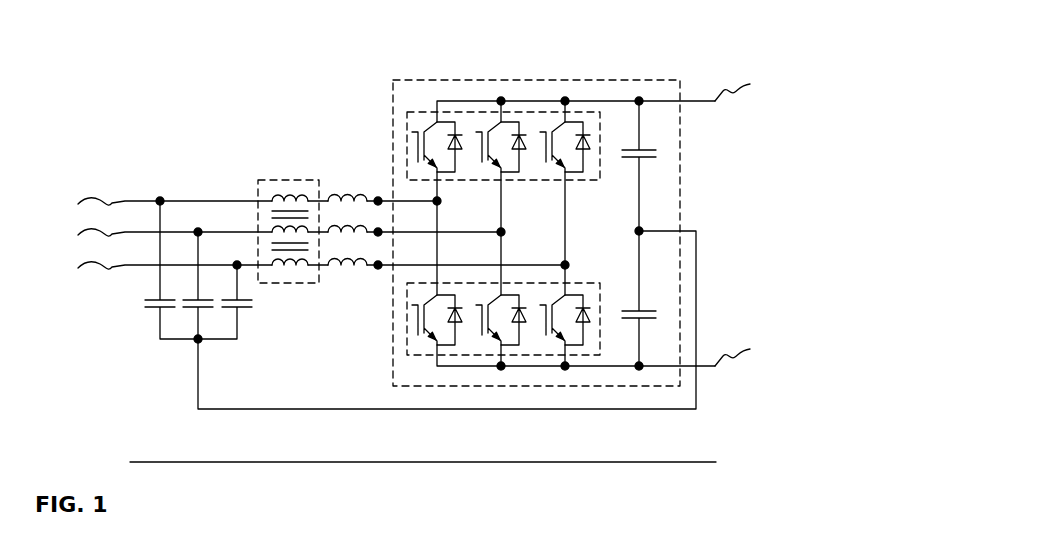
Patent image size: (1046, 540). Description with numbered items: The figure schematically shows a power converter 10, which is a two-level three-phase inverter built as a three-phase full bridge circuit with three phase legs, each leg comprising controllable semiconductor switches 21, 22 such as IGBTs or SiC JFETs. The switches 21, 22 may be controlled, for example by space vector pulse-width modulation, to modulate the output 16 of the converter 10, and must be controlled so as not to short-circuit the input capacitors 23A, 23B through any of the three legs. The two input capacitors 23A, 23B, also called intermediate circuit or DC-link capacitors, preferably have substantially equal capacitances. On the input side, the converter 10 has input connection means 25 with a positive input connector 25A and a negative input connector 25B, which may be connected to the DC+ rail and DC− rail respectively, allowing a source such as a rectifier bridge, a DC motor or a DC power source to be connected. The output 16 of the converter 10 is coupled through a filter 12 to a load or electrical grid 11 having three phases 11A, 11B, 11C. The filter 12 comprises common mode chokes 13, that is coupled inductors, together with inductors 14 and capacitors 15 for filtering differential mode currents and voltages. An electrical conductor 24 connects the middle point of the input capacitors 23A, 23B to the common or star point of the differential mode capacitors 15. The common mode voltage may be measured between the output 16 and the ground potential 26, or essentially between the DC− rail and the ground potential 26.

The power converter 10 is at (478, 222).
The electrical grid 11 is at (131, 196).
The first phase 11A is at (92, 201).
The second phase 11B is at (111, 233).
The third phase 11C is at (131, 266).
The filter 12 is at (321, 230).
The common mode chokes 13 is at (290, 180).
The inductors 14 is at (347, 277).
The capacitors 15 is at (127, 312).
The output 16 is at (379, 196).
The controllable switches 21 is at (527, 112).
The controllable switches 22 is at (407, 333).
The input capacitor 23A is at (668, 152).
The input capacitor 23B is at (668, 316).
The electrical conductor 24 is at (697, 237).
The input connection means 25 is at (753, 190).
The positive input connector 25A is at (753, 87).
The negative input connector 25B is at (753, 351).
The ground potential 26 is at (185, 462).